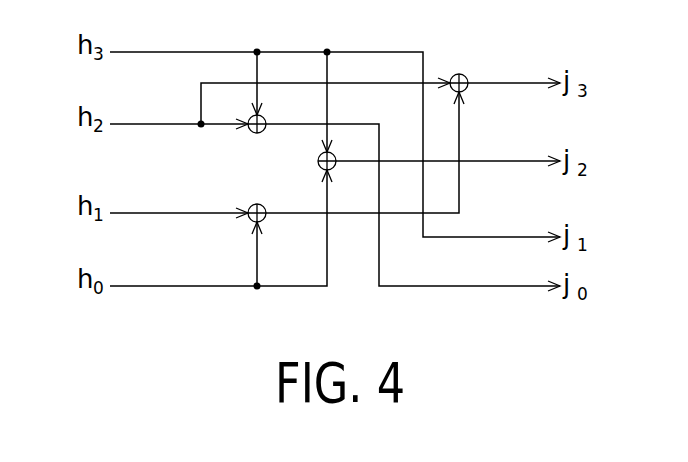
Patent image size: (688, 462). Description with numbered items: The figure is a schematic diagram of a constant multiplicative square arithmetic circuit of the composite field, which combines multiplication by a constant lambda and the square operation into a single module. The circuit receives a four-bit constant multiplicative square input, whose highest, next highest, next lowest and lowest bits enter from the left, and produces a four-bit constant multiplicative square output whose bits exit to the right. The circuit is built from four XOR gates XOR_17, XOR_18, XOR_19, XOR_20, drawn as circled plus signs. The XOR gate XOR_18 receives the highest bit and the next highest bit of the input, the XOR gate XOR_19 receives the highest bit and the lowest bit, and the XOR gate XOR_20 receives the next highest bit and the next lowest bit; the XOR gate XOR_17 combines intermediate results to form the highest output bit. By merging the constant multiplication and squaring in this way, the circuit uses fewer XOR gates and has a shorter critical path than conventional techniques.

The XOR gate 17 is at (466, 77).
The XOR gate 18 is at (249, 129).
The XOR gate 19 is at (319, 164).
The XOR gate 20 is at (250, 219).